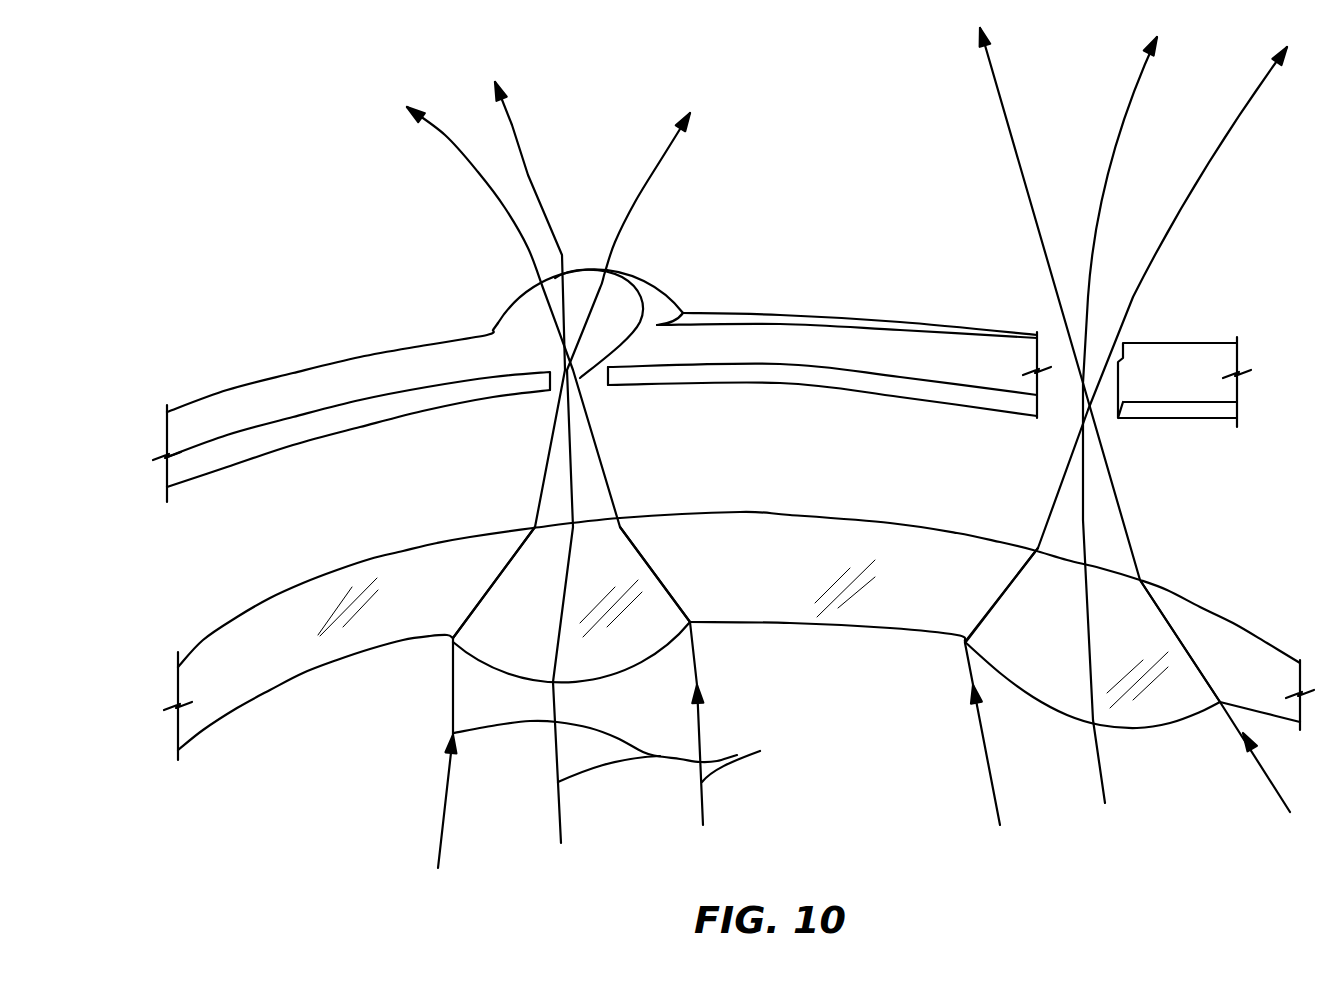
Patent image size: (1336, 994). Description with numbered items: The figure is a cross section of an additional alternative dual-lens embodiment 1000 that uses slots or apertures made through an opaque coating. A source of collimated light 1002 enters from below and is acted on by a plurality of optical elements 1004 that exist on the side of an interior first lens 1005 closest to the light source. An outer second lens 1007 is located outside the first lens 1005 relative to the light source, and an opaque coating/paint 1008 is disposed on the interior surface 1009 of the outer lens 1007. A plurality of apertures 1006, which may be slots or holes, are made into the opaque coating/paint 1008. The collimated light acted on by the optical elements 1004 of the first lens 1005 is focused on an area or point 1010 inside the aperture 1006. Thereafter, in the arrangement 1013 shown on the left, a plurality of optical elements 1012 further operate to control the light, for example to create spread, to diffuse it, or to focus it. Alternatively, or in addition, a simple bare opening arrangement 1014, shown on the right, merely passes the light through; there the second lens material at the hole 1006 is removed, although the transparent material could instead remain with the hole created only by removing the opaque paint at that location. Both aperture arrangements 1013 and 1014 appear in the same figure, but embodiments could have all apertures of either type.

The embodiment 1000 is at (836, 204).
The source of collimated light 1002 is at (737, 755).
The optical elements 1004 is at (627, 665).
The interior first lens 1005 is at (803, 528).
The apertures 1006 is at (1043, 332).
The outer second lens 1007 is at (828, 302).
The opaque coating/paint 1008 is at (357, 427).
The interior surface 1009 is at (947, 396).
The area or point 1010 is at (635, 300).
The optical elements 1012 is at (648, 262).
The arrangement 1013 is at (594, 215).
The simple bare opening arrangement 1014 is at (1142, 318).